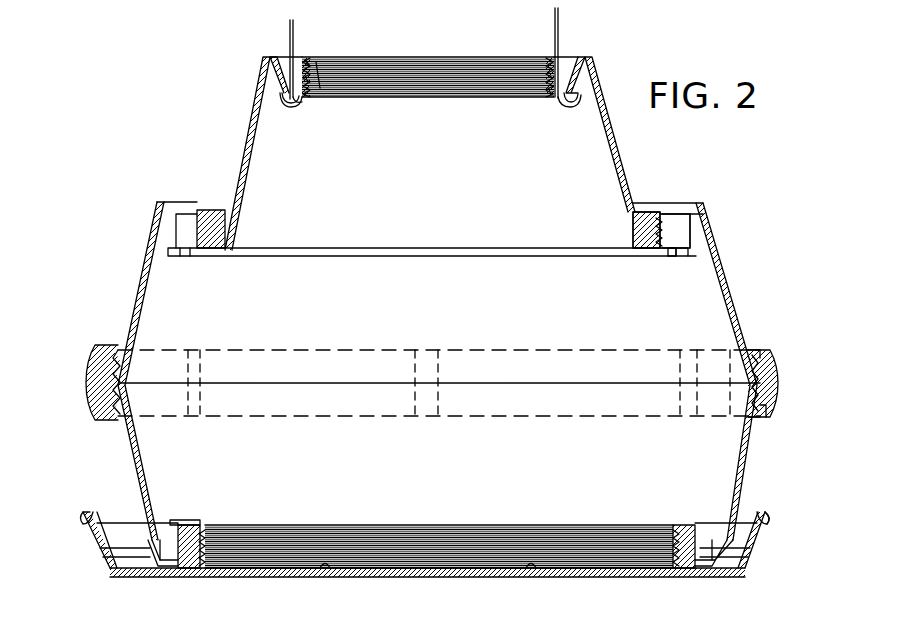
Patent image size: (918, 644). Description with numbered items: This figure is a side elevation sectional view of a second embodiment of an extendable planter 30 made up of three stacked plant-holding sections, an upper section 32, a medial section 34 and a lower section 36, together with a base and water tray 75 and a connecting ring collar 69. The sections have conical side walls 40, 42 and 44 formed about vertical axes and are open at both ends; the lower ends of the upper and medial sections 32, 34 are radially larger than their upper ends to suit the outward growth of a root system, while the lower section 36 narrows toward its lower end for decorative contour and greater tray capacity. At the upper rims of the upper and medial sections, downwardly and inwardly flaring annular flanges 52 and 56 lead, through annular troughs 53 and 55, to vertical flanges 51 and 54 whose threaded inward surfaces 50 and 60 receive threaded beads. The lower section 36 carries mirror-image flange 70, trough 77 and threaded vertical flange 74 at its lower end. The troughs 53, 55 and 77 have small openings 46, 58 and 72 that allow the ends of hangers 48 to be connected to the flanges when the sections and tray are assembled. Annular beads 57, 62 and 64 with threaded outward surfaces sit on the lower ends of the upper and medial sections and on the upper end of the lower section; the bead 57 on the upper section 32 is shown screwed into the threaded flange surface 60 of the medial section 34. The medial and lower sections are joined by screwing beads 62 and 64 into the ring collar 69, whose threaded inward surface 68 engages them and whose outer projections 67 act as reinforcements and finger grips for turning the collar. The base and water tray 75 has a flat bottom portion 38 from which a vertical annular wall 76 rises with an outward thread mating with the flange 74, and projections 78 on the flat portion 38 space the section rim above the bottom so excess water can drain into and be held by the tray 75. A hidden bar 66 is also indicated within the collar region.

The container assembly 30 is at (185, 132).
The upper plant-holding section 32 is at (406, 159).
The medial plant-holding section 34 is at (418, 291).
The lower plant-holding section 36 is at (339, 471).
The flat bottom portion 38 is at (456, 578).
The conical side wall 40 is at (250, 115).
The conical side wall 42 is at (722, 265).
The conical side wall 44 is at (127, 446).
The small opening 46 is at (296, 100).
The hanger 48 is at (296, 45).
The threaded inward surface 50 is at (316, 76).
The vertical flange 51 is at (306, 60).
The downwardly and inwardly flaring annular flange 52 is at (284, 75).
The annular trough 53 is at (285, 100).
The vertical flange 54 is at (694, 236).
The annular trough 55 is at (692, 268).
The downwardly and inwardly flaring annular flange 56 is at (695, 240).
The annular bead 57 is at (647, 237).
The small opening 58 is at (676, 256).
The threaded inward surface 60 is at (655, 215).
The annular bead 62 is at (768, 382).
The annular bead 64 is at (764, 408).
The hidden bar 66 is at (513, 358).
The projection 67 is at (424, 412).
The threaded inward surface 68 is at (775, 330).
The annular ring collar 69 is at (756, 418).
The flange 70 is at (176, 560).
The small opening 72 is at (683, 524).
The threaded vertical flange 74 is at (200, 570).
The base and water tray 75 is at (762, 545).
The vertical annular wall 76 is at (705, 545).
The annular trough 77 is at (184, 522).
The projection 78 is at (325, 572).